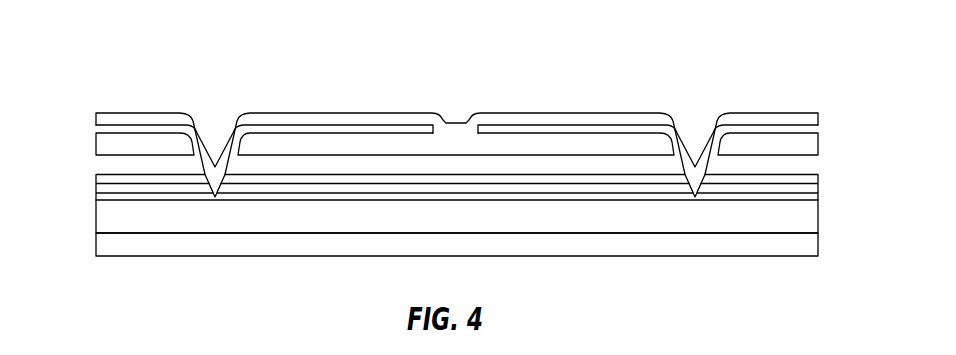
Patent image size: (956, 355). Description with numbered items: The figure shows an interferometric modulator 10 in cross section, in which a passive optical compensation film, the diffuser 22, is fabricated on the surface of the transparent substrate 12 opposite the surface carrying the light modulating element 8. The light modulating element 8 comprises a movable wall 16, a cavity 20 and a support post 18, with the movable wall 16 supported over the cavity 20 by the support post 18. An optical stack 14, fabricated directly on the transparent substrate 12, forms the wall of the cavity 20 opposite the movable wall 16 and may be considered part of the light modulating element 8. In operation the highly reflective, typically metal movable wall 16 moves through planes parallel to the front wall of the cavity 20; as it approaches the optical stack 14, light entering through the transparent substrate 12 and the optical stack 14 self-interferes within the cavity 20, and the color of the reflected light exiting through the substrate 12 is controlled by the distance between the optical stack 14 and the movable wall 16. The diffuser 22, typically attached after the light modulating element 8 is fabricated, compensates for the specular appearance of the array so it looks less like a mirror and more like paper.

The interferometric modulator 10 is at (139, 48).
The light modulating element 8 is at (828, 113).
The movable wall 16 is at (454, 123).
The support post 18 is at (518, 125).
The cavity 20 is at (676, 160).
The optical stack 14 is at (828, 174).
The transparent substrate 12 is at (96, 213).
The diffuser 22 is at (96, 243).